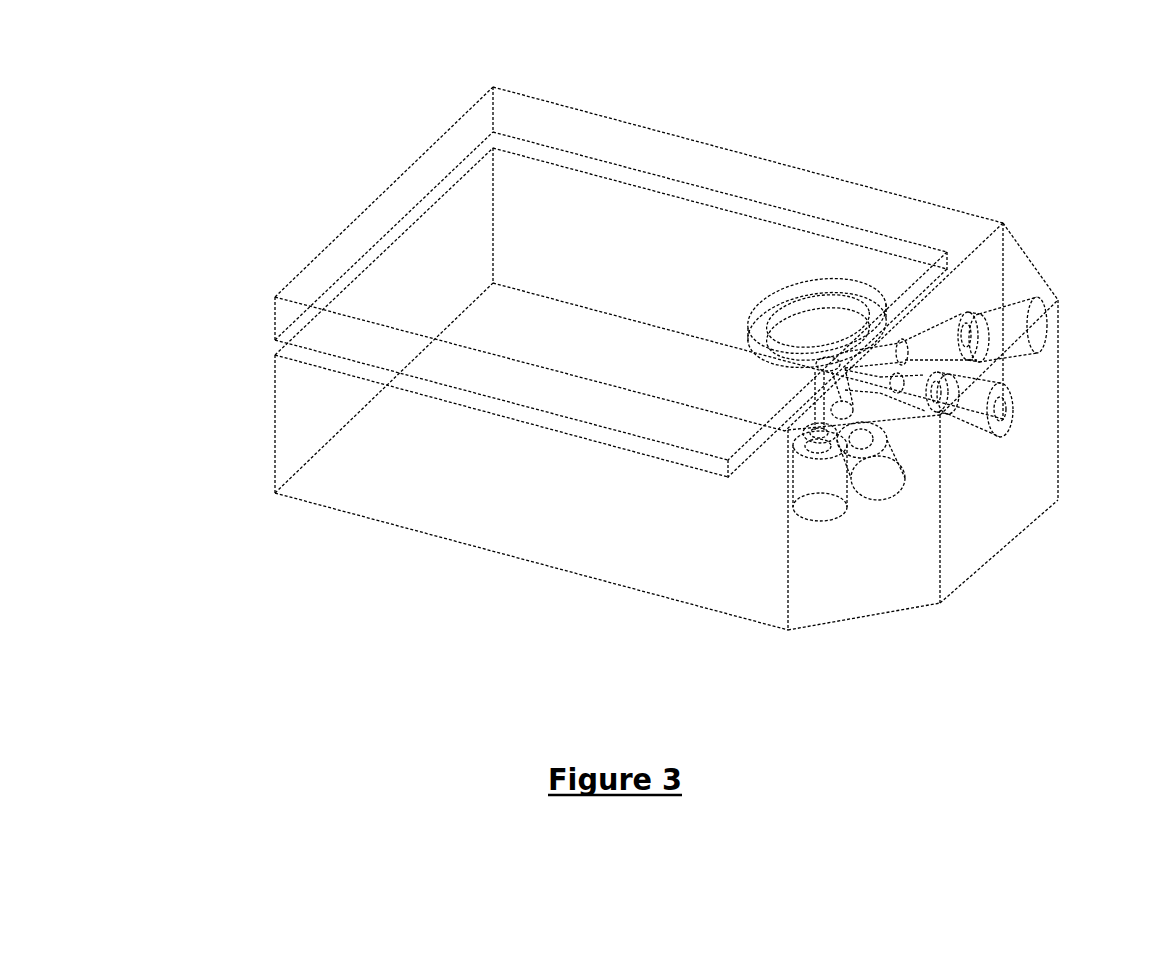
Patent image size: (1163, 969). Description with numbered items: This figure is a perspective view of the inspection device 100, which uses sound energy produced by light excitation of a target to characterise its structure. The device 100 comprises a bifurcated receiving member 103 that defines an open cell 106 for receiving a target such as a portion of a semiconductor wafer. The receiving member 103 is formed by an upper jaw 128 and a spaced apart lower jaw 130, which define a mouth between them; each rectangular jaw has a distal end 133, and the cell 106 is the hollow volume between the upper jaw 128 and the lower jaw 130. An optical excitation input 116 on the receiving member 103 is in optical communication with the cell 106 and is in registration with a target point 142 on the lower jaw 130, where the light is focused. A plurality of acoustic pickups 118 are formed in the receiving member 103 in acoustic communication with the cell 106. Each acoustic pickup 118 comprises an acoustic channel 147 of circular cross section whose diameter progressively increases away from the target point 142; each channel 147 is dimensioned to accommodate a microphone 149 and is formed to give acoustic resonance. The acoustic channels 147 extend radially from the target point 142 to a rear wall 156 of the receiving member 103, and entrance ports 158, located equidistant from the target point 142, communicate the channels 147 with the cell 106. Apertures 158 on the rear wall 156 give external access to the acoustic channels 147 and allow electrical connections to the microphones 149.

The inspection device 100 is at (897, 76).
The bifurcated receiving member 103 is at (510, 545).
The open cell 106 is at (307, 358).
The optical excitation input 116 is at (783, 315).
The acoustic pickup 118 is at (873, 359).
The upper jaw 128 is at (540, 107).
The lower jaw 130 is at (360, 480).
The distal end 133 is at (340, 228).
The target point 142 is at (828, 357).
The acoustic channel 147 is at (1032, 327).
The microphone 149 is at (1000, 412).
The rear wall 156 is at (990, 520).
The entrance port 158 is at (817, 367).